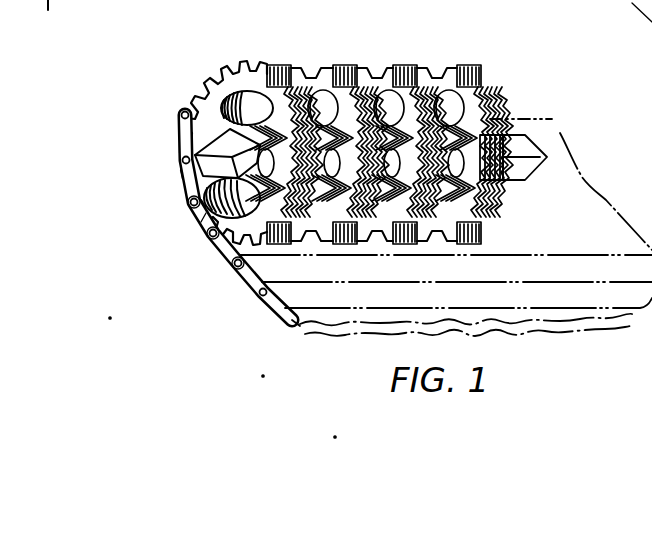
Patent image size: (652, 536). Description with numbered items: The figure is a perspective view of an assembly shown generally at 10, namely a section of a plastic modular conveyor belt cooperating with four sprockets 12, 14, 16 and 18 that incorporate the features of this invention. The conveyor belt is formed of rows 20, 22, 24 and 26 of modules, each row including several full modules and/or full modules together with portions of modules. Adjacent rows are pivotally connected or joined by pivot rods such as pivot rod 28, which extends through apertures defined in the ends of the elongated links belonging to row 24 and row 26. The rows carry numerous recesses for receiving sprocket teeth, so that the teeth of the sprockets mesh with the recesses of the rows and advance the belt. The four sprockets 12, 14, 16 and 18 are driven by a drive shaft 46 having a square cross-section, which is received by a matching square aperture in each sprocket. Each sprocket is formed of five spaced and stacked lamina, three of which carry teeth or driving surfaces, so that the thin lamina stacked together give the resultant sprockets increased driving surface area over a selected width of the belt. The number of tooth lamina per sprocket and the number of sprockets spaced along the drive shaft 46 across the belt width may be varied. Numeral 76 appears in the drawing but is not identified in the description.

The section of plastic modular conveyor belt with sprockets 10 is at (502, 68).
The sprocket 12 is at (268, 66).
The sprocket 14 is at (328, 66).
The sprocket 16 is at (383, 68).
The sprocket 18 is at (447, 68).
The row of modules 20 is at (266, 307).
The row of modules 22 is at (243, 283).
The row of modules 24 is at (219, 253).
The row of modules 26 is at (193, 223).
The pivot rod 28 is at (205, 240).
The drive shaft 46 is at (527, 147).
The frame member 76 is at (632, 3).